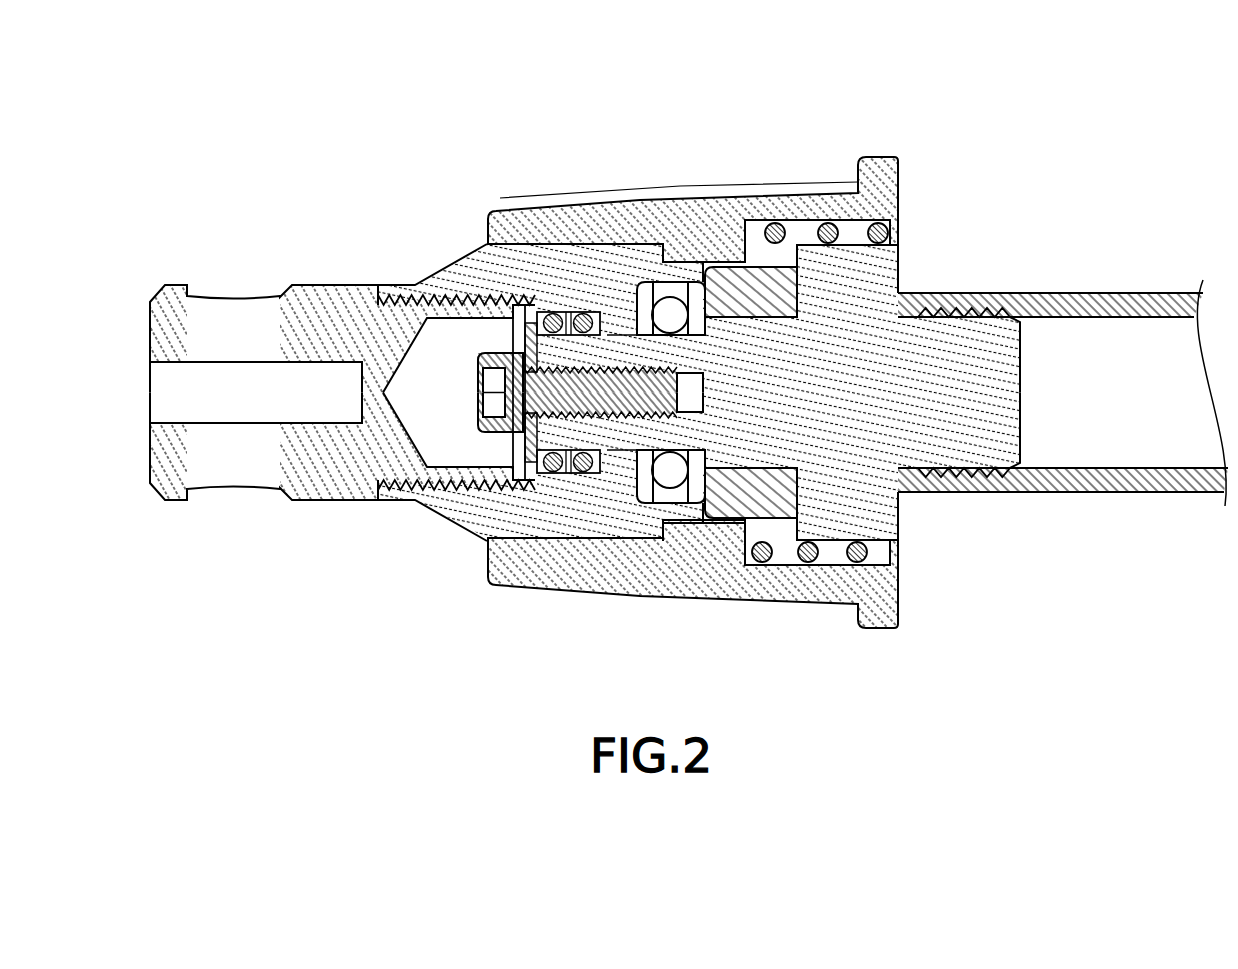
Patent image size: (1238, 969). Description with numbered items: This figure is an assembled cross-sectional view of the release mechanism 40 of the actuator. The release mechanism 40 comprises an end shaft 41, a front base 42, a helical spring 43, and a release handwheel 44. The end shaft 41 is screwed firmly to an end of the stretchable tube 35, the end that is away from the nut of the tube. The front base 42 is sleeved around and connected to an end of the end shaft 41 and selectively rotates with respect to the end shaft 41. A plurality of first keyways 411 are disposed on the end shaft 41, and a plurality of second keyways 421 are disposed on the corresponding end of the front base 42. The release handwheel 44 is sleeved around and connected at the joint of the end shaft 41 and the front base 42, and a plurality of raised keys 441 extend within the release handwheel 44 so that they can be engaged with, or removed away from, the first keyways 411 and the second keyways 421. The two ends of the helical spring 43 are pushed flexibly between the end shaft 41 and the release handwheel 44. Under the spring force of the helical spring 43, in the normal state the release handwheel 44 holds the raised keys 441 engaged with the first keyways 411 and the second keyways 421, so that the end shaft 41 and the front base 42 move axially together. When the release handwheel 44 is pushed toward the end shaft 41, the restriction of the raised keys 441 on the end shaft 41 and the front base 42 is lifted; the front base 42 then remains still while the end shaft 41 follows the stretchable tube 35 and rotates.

The release mechanism 40 is at (689, 324).
The end shaft 41 is at (865, 268).
The first keyways 411 is at (787, 250).
The front base 42 is at (487, 277).
The second keyways 421 is at (688, 265).
The helical spring 43 is at (830, 222).
The release handwheel 44 is at (593, 222).
The raised keys 441 is at (712, 250).
The stretchable tube 35 is at (1130, 300).